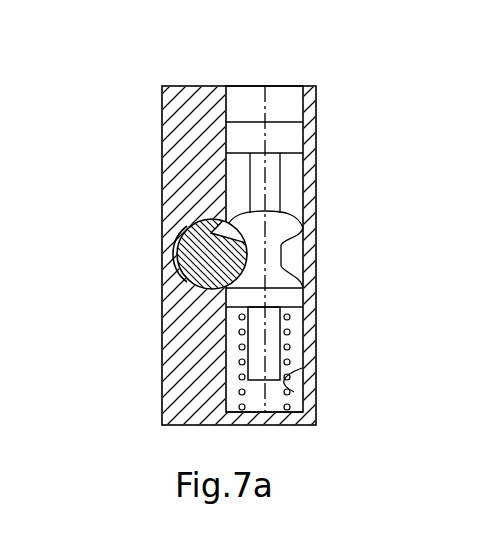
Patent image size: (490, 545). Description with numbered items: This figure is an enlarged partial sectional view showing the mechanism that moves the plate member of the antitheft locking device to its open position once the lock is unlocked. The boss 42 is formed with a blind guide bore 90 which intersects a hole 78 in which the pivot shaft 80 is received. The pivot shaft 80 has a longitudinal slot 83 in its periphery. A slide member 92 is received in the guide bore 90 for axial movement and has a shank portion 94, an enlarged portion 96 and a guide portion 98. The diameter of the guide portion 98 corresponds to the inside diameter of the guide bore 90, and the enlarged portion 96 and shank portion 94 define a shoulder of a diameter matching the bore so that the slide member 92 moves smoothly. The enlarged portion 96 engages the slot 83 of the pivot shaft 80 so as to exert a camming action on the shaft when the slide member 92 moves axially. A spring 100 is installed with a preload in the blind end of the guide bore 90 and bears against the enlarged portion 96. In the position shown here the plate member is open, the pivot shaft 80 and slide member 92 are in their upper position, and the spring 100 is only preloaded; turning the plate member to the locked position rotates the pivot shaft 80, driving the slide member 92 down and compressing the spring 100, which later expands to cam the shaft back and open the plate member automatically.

The boss 42 is at (162, 353).
The guide portion 98 is at (292, 133).
The slide member 92 is at (291, 223).
The enlarged portion 96 is at (296, 232).
The hole 78 is at (205, 246).
The longitudinal slot 83 is at (228, 225).
The pivot shaft 80 is at (178, 267).
The shank portion 94 is at (273, 323).
The blind guide bore 90 is at (295, 391).
The spring 100 is at (291, 395).